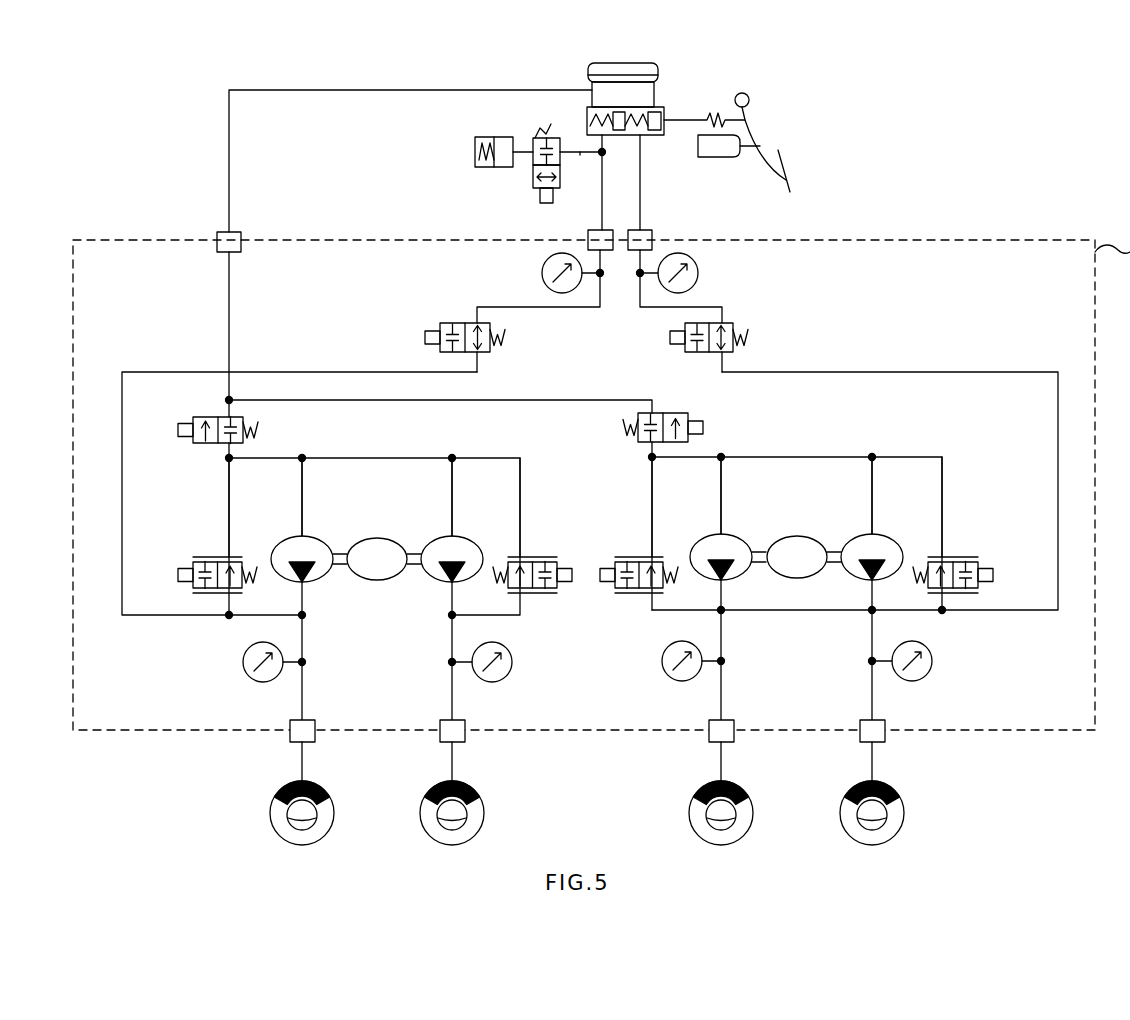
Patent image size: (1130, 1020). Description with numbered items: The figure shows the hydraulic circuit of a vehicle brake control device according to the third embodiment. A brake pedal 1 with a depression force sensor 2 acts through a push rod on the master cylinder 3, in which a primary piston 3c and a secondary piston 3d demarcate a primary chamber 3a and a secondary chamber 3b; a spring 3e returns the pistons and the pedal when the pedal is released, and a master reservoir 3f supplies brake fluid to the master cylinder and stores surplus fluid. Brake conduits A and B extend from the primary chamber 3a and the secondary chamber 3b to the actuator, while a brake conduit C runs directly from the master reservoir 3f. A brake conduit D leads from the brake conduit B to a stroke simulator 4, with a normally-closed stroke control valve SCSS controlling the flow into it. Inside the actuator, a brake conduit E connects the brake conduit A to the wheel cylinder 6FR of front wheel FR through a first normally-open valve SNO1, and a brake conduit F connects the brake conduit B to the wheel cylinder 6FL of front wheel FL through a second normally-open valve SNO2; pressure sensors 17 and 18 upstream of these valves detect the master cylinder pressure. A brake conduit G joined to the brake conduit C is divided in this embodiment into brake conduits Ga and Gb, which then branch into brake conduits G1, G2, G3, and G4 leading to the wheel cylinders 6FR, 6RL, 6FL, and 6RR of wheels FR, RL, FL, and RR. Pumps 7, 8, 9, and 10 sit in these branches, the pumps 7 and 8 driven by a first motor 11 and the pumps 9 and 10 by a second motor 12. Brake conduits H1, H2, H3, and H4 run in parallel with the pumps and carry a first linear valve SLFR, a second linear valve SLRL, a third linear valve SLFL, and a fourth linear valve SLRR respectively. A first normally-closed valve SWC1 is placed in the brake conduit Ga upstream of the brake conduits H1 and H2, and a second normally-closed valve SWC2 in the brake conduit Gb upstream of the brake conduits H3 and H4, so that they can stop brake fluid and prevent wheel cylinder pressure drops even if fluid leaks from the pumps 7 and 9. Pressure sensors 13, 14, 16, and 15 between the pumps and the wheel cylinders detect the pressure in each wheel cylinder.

The brake pedal 1 is at (785, 155).
The depression force sensor 2 is at (732, 157).
The master cylinder 3 is at (656, 107).
The primary chamber 3a is at (645, 132).
The secondary chamber 3b is at (612, 133).
The primary piston 3c is at (661, 115).
The secondary piston 3d is at (615, 115).
The spring 3e is at (633, 133).
The master reservoir 3f is at (590, 68).
The stroke simulator 4 is at (475, 152).
The stroke control valve SCSS is at (535, 183).
The wheel cylinder 6FL is at (322, 792).
The wheel cylinder 6RR is at (472, 792).
The wheel cylinder 6RL is at (740, 790).
The wheel cylinder 6FR is at (891, 790).
The pump 7 is at (853, 580).
The pump 8 is at (740, 580).
The pump 9 is at (322, 582).
The pump 10 is at (433, 582).
The first motor 11 is at (800, 578).
The second motor 12 is at (380, 580).
The first pressure sensor 13 is at (917, 681).
The second pressure sensor 14 is at (680, 681).
The fourth pressure sensor 15 is at (496, 682).
The third pressure sensor 16 is at (261, 682).
The pressure sensor 17 is at (698, 273).
The pressure sensor 18 is at (542, 273).
The first normally-open valve SNO1 is at (733, 323).
The second normally-open valve SNO2 is at (440, 323).
The first normally-closed valve SWC1 is at (697, 400).
The second normally-closed valve SWC2 is at (193, 417).
The third linear valve SLFL is at (207, 560).
The fourth linear valve SLRR is at (538, 560).
The second linear valve SLRL is at (620, 557).
The first linear valve SLFR is at (965, 557).
The brake conduit A is at (652, 230).
The brake conduit B is at (588, 230).
The brake conduit C is at (347, 90).
The brake conduit D is at (580, 167).
The brake conduit E is at (988, 370).
The brake conduit F is at (289, 372).
The brake conduit G is at (229, 298).
The brake conduit Ga is at (578, 400).
The brake conduit Gb is at (243, 418).
The brake conduit G1 is at (872, 483).
The brake conduit G2 is at (721, 483).
The brake conduit G3 is at (302, 485).
The brake conduit G4 is at (452, 485).
The brake conduit H1 is at (905, 457).
The brake conduit H2 is at (652, 483).
The brake conduit H3 is at (232, 523).
The brake conduit H4 is at (520, 485).
The front wheel FL is at (334, 815).
The rear wheel RR is at (484, 815).
The rear wheel RL is at (753, 815).
The front wheel FR is at (904, 815).